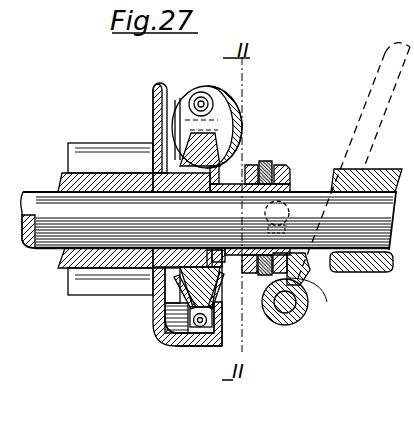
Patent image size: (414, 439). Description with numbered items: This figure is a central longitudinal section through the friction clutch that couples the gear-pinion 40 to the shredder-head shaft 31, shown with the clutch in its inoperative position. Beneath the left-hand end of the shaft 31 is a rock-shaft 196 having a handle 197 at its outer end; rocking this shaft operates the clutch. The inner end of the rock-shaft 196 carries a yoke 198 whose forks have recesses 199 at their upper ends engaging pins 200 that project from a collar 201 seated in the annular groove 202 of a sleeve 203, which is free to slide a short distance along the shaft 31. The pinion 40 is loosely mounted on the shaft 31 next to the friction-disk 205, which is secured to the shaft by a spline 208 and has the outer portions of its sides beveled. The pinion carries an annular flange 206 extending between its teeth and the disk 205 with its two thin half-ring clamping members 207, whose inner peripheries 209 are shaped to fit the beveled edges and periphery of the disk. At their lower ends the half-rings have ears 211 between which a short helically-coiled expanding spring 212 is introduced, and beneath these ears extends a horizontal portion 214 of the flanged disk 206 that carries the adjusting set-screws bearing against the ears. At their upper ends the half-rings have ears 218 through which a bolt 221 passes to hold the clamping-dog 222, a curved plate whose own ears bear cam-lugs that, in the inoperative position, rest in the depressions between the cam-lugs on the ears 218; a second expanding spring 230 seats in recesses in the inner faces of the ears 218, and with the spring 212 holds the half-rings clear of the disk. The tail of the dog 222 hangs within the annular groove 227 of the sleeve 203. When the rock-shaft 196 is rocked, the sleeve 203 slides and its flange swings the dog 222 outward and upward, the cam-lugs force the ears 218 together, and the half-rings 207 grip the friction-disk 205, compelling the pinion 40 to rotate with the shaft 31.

The shredder-head shaft 31 is at (45, 250).
The gear-pinion 40 is at (88, 143).
The rock-shaft 196 is at (297, 324).
The handle 197 is at (386, 66).
The yoke 198 is at (257, 288).
The recesses 199 is at (289, 213).
The pins 200 is at (333, 179).
The collar 201 is at (291, 280).
The annular groove 202 is at (283, 165).
The sleeve 203 is at (249, 163).
The friction-disk 205 is at (165, 328).
The annular flange 206 is at (153, 100).
The clamping members 207 is at (163, 303).
The spline 208 is at (152, 177).
The inner peripheries 209 is at (152, 274).
The ears 211 is at (180, 347).
The expanding spring 212 is at (218, 349).
The horizontal portion 214 is at (190, 348).
The ears 218 is at (225, 104).
The bolt 221 is at (201, 92).
The clamping-dog 222 is at (233, 112).
The annular groove 227 is at (203, 333).
The expanding spring 230 is at (224, 90).